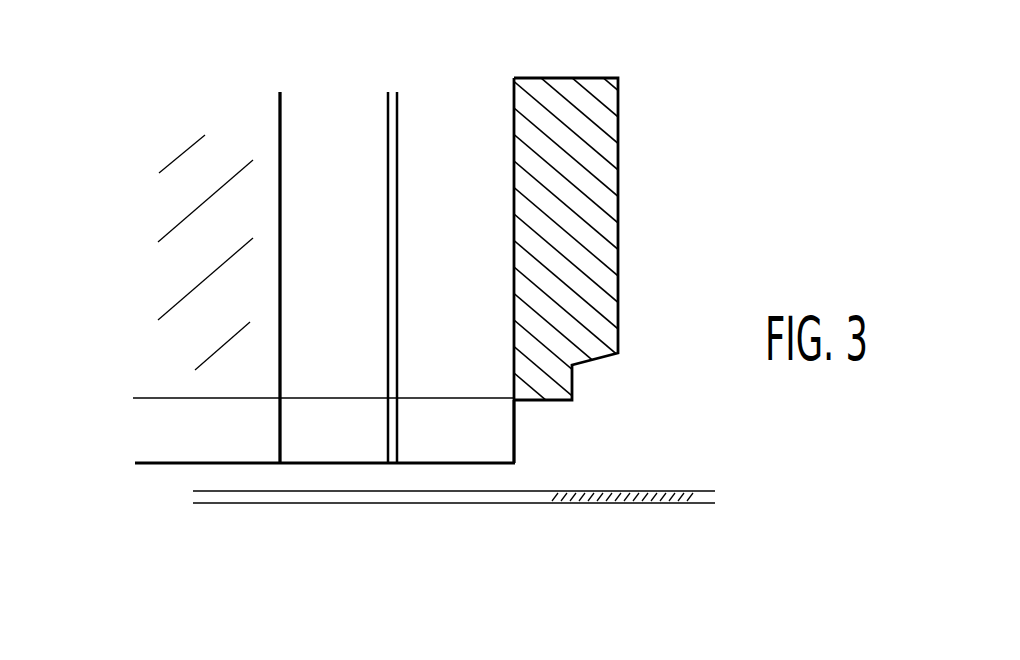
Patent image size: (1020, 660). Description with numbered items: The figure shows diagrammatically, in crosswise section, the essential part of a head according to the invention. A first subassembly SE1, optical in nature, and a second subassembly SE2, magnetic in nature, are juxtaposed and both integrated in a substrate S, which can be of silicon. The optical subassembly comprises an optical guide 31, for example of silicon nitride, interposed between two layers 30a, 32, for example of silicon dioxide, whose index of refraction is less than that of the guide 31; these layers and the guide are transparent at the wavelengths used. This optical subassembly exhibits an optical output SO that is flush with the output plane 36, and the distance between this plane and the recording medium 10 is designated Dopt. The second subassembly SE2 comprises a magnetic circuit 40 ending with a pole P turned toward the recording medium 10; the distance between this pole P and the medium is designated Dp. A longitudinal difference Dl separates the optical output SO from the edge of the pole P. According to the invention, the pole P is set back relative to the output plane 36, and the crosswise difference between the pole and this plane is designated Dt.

The recording medium 10 is at (695, 491).
The first layer 30a is at (295, 207).
The optical guide 31 is at (390, 287).
The layer 32 is at (470, 210).
The output plane 36 is at (200, 466).
The magnetic circuit 40 is at (601, 228).
The substrate S is at (212, 48).
The first subassembly SE1 is at (503, 53).
The second subassembly SE2 is at (622, 53).
The pole P is at (573, 401).
The crosswise difference Dt is at (158, 463).
The optical distance Dopt is at (224, 465).
The optical output SO is at (393, 467).
The longitudinal difference Dl is at (515, 475).
The pole distance Dp is at (561, 400).